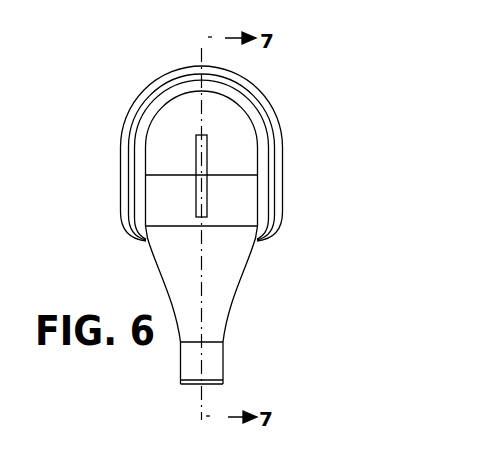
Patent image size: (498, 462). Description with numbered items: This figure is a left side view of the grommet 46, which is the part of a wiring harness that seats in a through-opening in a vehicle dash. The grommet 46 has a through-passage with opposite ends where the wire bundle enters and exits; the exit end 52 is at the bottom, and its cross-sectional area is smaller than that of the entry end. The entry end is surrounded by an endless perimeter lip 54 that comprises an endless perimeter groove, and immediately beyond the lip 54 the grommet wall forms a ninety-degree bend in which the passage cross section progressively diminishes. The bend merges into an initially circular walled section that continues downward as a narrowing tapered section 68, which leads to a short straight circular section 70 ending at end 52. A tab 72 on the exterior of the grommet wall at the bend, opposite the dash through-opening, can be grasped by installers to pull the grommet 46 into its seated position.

The grommet 46 is at (272, 89).
The endless perimeter lip 54 is at (281, 130).
The narrowing tapered section 68 is at (248, 263).
The tab 72 is at (196, 152).
The short straight circular section 70 is at (223, 365).
The end 52 is at (187, 386).